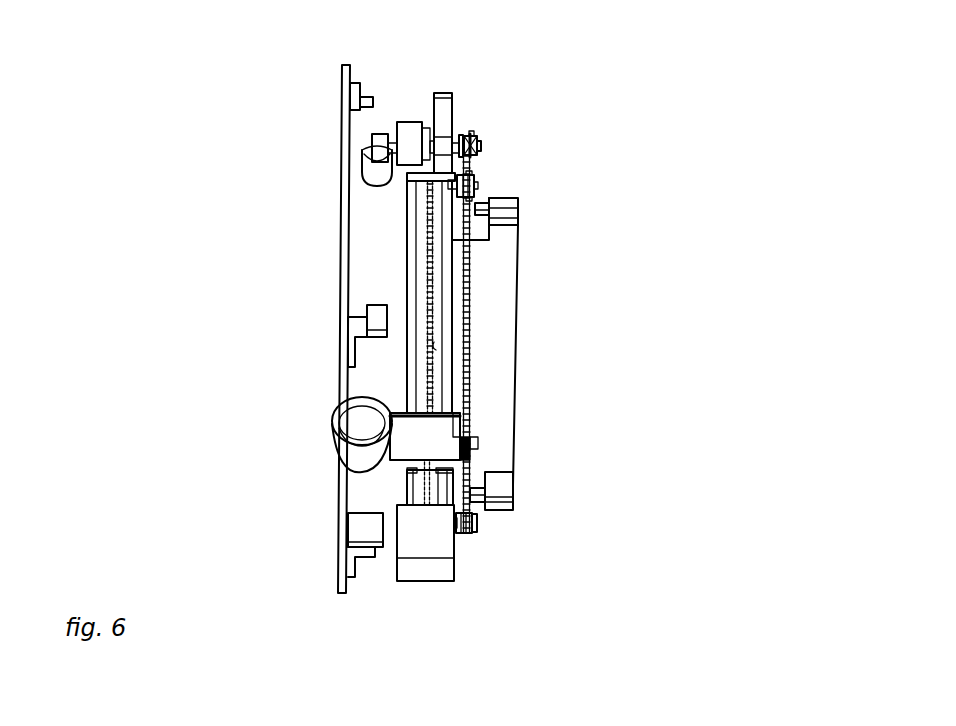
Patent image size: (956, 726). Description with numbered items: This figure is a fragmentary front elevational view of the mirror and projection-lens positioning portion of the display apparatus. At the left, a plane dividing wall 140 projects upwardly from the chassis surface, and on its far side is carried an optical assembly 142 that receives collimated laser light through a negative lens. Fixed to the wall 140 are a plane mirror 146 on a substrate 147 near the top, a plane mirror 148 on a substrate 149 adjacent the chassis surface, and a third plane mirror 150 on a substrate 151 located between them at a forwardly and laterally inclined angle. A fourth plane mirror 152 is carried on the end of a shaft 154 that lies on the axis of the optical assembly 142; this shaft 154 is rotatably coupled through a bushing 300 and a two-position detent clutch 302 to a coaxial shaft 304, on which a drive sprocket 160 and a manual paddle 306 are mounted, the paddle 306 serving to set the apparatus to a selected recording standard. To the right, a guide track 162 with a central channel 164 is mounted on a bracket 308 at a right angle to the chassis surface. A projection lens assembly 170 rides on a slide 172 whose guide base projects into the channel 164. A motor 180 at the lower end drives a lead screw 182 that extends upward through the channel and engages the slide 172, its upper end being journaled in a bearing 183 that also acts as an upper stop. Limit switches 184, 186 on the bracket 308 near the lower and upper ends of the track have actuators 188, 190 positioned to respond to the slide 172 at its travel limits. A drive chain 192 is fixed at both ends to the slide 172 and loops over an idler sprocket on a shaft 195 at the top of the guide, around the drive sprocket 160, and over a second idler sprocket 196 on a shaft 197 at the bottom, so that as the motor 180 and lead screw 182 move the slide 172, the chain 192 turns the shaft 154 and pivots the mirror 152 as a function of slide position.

The plane dividing wall 140 is at (343, 97).
The substrate 147 is at (362, 84).
The plane mirror 146 is at (360, 110).
The optical assembly 142 is at (375, 191).
The fourth plane mirror 152 is at (382, 166).
The shaft 154 is at (394, 125).
The bushing 300 is at (402, 128).
The two-position detent clutch 302 is at (448, 115).
The paddle 306 is at (456, 133).
The coaxial shaft 304 is at (473, 138).
The drive sprocket 160 is at (480, 147).
The drive chain 192 is at (469, 384).
The shaft 195 is at (471, 165).
The switch actuator 190 is at (481, 201).
The limit switch 186 is at (518, 201).
The bracket 308 is at (498, 264).
The bearing 183 is at (423, 184).
The guide track 162 is at (447, 301).
The central channel 164 is at (441, 345).
The lead screw 182 is at (426, 373).
The slide 172 is at (434, 438).
The projection lens assembly 170 is at (343, 446).
The third plane mirror 150 is at (378, 309).
The substrate 151 is at (360, 326).
The plane mirror 148 is at (363, 529).
The substrate 149 is at (360, 560).
The motor 180 is at (438, 571).
The second idler sprocket 196 is at (468, 533).
The shaft 197 is at (478, 524).
The limit switch 184 is at (506, 492).
The switch actuator 188 is at (476, 497).